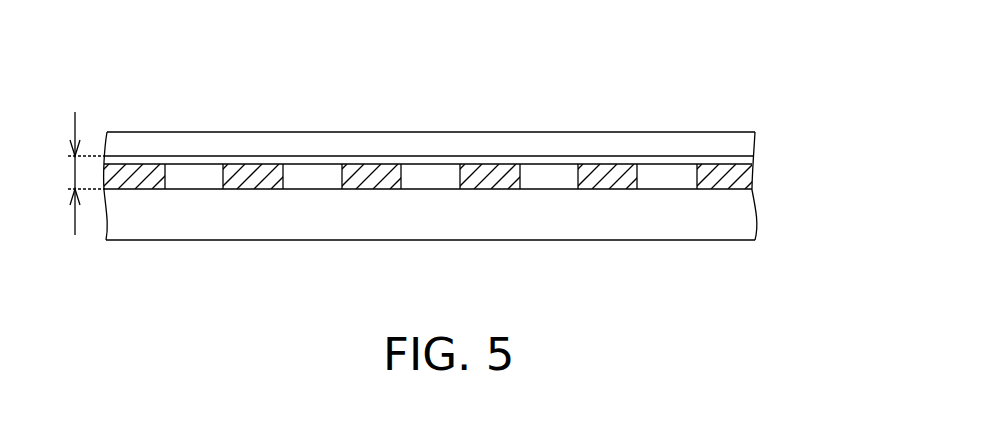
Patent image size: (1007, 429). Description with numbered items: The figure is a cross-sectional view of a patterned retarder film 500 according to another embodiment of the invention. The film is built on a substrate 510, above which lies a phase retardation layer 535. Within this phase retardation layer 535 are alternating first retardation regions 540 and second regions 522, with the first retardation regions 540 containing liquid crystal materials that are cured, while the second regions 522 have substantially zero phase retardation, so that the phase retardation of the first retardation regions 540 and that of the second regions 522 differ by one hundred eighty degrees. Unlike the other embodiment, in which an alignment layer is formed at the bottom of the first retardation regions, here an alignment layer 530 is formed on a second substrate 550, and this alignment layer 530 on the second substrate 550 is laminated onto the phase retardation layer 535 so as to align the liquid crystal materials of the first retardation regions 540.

The display device / light emitting structure 500 is at (890, 43).
The substrate 510 is at (753, 222).
The second regions 522 is at (264, 189).
The alignment layer 530 is at (745, 158).
The phase retardation layer 535 is at (63, 173).
The first retardation regions 540 is at (317, 174).
The second substrate 550 is at (745, 146).